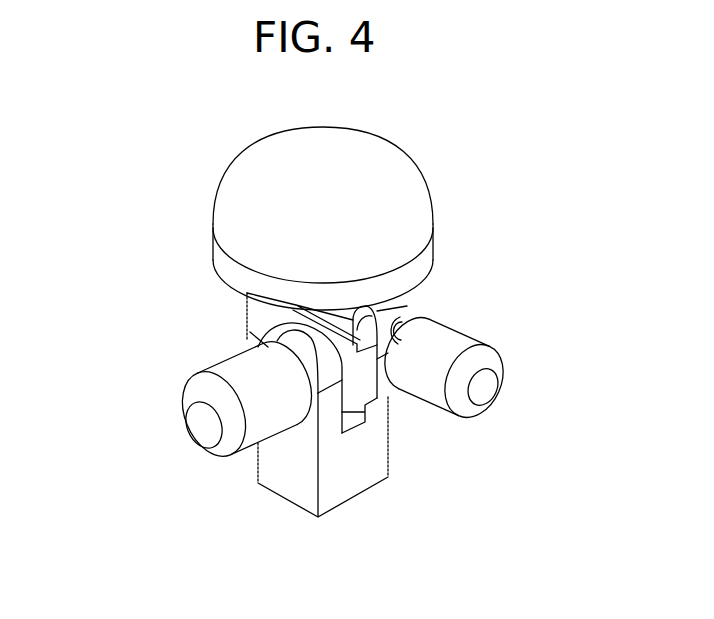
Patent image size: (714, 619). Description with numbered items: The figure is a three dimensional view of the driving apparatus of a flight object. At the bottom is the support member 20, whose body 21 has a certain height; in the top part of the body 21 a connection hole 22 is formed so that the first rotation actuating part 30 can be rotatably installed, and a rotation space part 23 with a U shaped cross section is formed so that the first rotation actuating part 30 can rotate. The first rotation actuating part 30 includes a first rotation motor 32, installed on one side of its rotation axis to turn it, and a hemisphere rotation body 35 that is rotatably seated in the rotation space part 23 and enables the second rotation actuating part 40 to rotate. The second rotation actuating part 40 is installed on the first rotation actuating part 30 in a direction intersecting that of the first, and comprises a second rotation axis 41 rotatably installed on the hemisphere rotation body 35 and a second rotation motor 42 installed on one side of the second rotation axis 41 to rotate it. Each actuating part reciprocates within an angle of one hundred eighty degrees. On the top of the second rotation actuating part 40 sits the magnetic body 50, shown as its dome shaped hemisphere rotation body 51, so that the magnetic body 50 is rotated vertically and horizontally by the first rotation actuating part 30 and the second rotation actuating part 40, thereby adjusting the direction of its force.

The support member 20 is at (334, 430).
The body 21 is at (381, 465).
The connection hole 22 is at (272, 348).
The rotation space part 23 is at (367, 413).
The first rotation actuating part 30 is at (163, 444).
The first rotation motor 32 is at (198, 428).
The hemisphere rotation body 35 is at (258, 317).
The second rotation actuating part 40 is at (530, 344).
The second rotation axis 41 is at (400, 312).
The second rotation motor 42 is at (450, 340).
The magnetic body 50 is at (347, 218).
The hemisphere rotation body 51 is at (247, 203).